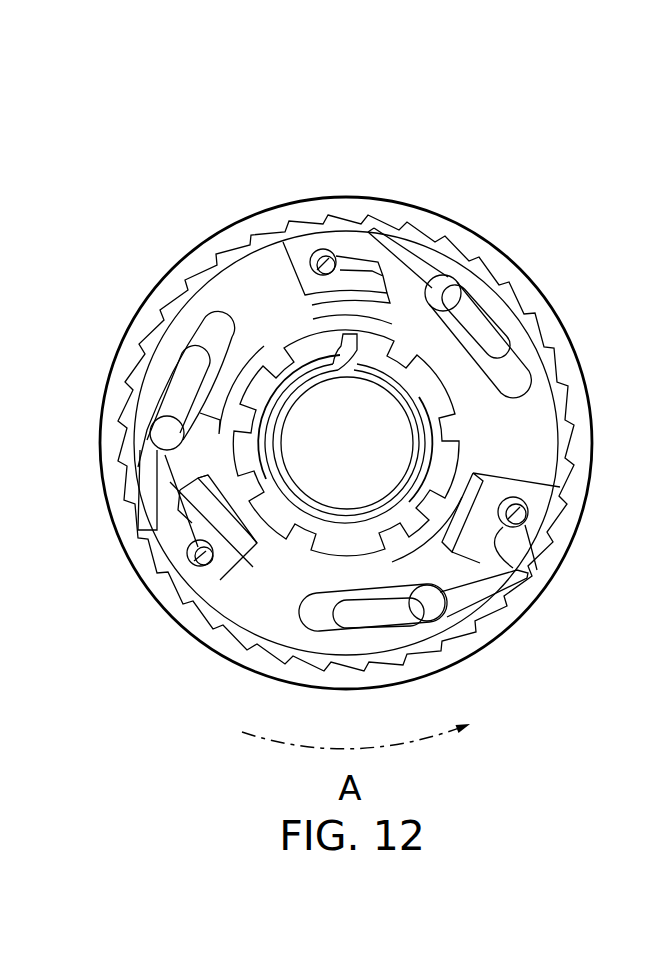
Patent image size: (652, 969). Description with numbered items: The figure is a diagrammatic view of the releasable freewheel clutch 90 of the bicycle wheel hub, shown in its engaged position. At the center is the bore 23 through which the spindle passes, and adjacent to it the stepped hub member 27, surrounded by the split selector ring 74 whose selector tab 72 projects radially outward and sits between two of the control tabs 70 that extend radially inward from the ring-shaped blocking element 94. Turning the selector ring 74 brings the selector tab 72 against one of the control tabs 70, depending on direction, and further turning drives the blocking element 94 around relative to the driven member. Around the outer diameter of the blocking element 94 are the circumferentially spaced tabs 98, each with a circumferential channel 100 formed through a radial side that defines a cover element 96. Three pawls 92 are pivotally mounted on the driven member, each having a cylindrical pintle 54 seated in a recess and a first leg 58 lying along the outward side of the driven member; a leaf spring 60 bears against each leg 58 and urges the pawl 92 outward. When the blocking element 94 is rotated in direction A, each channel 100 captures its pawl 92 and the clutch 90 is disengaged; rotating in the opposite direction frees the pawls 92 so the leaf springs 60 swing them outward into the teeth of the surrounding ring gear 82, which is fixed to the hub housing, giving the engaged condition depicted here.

The releasable freewheel clutch 90 is at (296, 152).
The ring gear 82 is at (433, 223).
The tabs 98 is at (243, 270).
The first leg 58 is at (372, 227).
The stepped hub ring 27 is at (445, 433).
The control tabs 70 is at (400, 357).
The bore 23 is at (300, 507).
The selector ring 74 is at (330, 520).
The selector tab 72 is at (340, 348).
The cover element 96 is at (520, 333).
The circumferential channel 100 is at (193, 337).
The pawls 92 is at (443, 283).
The leaf spring 60 is at (187, 530).
The cylindrical pintle 54 is at (490, 297).
The blocking element 94 is at (236, 320).